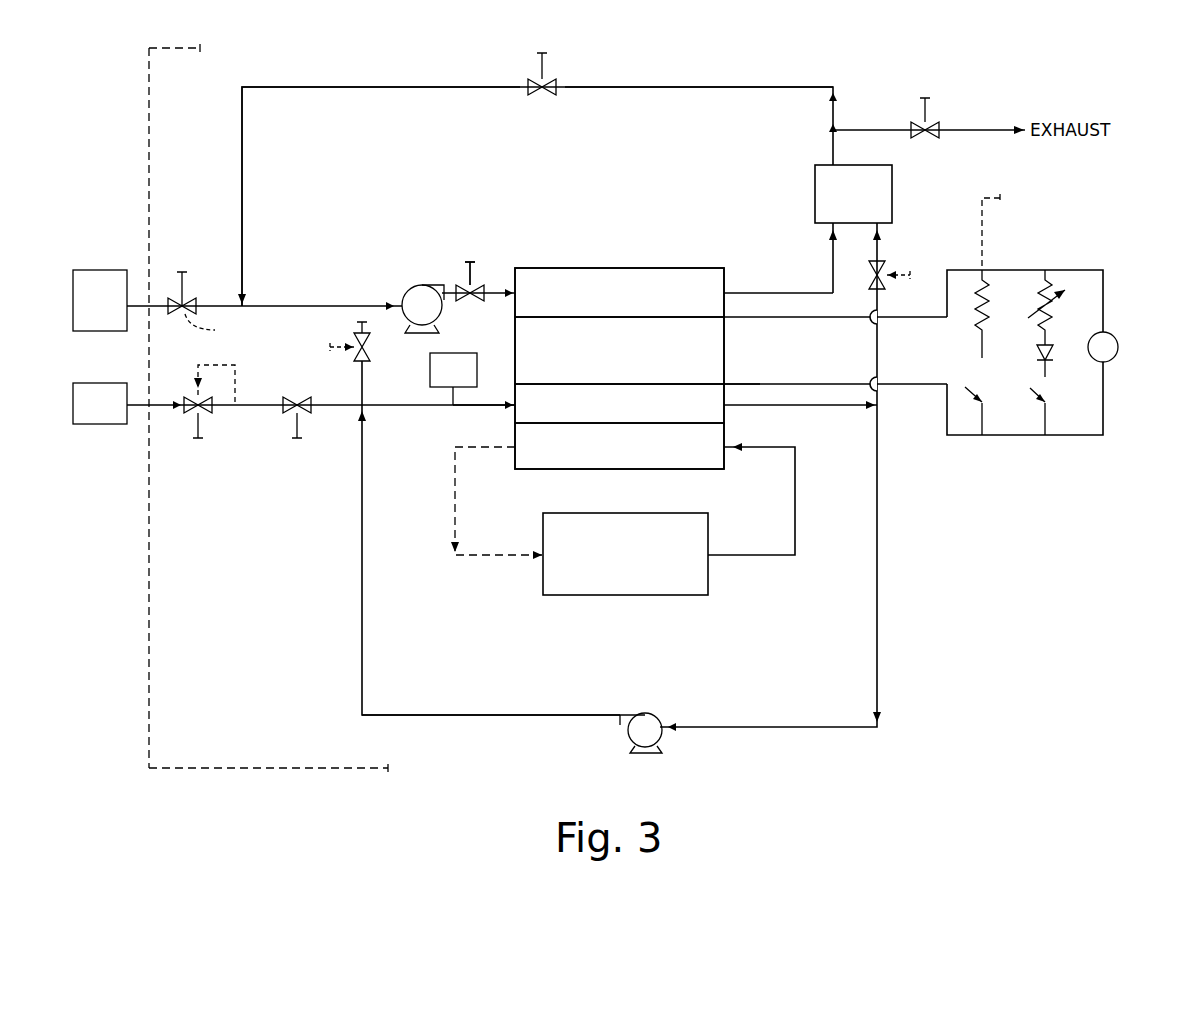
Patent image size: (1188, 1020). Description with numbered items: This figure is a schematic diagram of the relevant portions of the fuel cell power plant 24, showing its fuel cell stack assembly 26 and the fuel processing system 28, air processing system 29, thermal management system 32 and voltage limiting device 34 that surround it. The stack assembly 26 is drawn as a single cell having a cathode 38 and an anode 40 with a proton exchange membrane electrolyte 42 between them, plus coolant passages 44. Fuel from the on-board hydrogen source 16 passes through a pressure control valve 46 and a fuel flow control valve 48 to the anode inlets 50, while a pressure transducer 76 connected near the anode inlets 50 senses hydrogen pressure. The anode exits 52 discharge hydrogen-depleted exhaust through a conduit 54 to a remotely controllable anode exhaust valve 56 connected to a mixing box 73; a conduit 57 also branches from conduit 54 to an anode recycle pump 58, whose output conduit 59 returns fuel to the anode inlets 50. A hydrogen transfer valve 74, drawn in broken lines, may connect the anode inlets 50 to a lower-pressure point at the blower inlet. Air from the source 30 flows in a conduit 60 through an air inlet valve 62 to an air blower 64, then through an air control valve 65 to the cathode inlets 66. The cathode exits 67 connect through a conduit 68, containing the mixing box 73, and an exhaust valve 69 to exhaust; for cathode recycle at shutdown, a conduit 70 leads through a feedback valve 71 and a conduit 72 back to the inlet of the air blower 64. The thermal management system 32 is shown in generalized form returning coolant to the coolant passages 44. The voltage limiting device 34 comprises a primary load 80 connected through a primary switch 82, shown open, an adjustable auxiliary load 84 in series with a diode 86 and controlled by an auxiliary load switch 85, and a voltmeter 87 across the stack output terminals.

The on-board source of hydrogen 16 is at (92, 428).
The fuel cell power plant 24 is at (146, 627).
The fuel cell stack assembly 26 is at (612, 255).
The fuel processing system 28 is at (337, 553).
The air processing system 29 is at (300, 78).
The air source 30 is at (98, 268).
The thermal management system 32 is at (703, 600).
The voltage limiting device 34 is at (1080, 245).
The cathode 38 is at (685, 265).
The anode 40 is at (718, 418).
The electrolyte 42 is at (728, 354).
The coolant passages 44 is at (700, 462).
The pressure control valve 46 is at (195, 418).
The fuel flow control valve 48 is at (292, 396).
The anode inlets 50 is at (508, 418).
The anode exits 52 is at (736, 397).
The anode exhaust conduit 54 is at (825, 408).
The anode exhaust valve 56 is at (896, 268).
The anode recycle conduit 57 is at (882, 662).
The anode recycle pump 58 is at (664, 712).
The recycle pump output conduit 59 is at (465, 712).
The air conduit 60 is at (162, 296).
The air inlet valve 62 is at (215, 330).
The air blower 64 is at (412, 289).
The air control valve 65 is at (463, 263).
The cathode inlets 66 is at (505, 286).
The cathode exits 67 is at (730, 292).
The cathode exhaust conduit 68 is at (810, 290).
The exhaust valve 69 is at (940, 120).
The cathode recycle conduit 70 is at (632, 86).
The feedback valve 71 is at (548, 96).
The cathode recycle return conduit 72 is at (385, 90).
The mixing box 73 is at (894, 195).
The hydrogen transfer valve 74 is at (352, 340).
The pressure transducer 76 is at (428, 366).
The primary load 80 is at (970, 312).
The primary switch 82 is at (972, 392).
The auxiliary load 84 is at (1058, 302).
The auxiliary load switch 85 is at (1034, 392).
The diode 86 is at (1052, 370).
The voltmeter 87 is at (1119, 345).